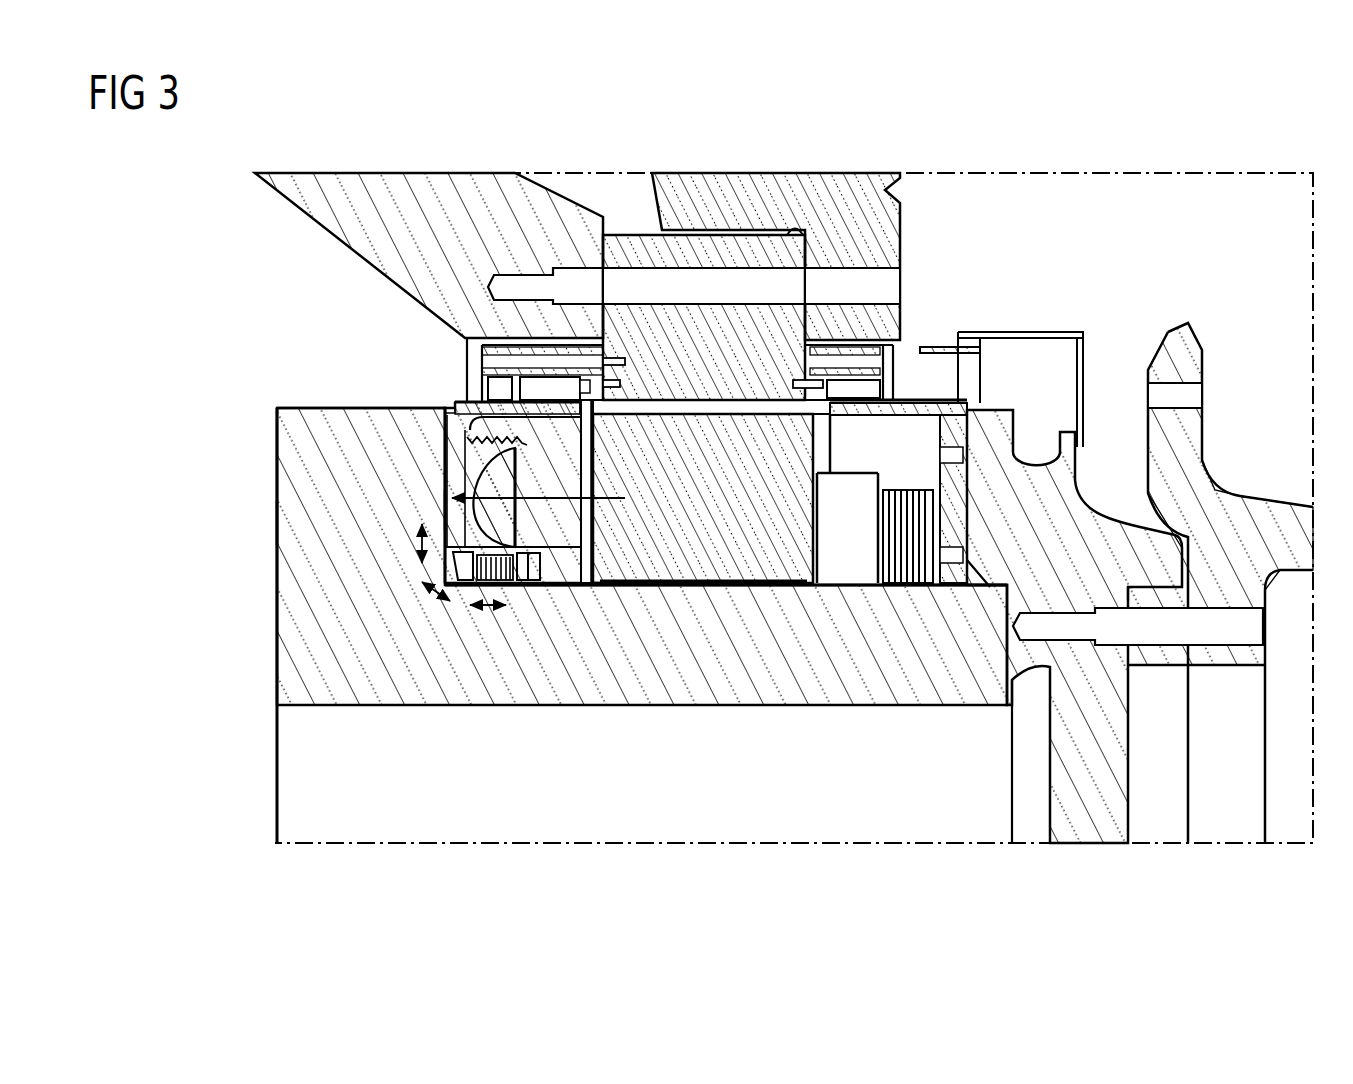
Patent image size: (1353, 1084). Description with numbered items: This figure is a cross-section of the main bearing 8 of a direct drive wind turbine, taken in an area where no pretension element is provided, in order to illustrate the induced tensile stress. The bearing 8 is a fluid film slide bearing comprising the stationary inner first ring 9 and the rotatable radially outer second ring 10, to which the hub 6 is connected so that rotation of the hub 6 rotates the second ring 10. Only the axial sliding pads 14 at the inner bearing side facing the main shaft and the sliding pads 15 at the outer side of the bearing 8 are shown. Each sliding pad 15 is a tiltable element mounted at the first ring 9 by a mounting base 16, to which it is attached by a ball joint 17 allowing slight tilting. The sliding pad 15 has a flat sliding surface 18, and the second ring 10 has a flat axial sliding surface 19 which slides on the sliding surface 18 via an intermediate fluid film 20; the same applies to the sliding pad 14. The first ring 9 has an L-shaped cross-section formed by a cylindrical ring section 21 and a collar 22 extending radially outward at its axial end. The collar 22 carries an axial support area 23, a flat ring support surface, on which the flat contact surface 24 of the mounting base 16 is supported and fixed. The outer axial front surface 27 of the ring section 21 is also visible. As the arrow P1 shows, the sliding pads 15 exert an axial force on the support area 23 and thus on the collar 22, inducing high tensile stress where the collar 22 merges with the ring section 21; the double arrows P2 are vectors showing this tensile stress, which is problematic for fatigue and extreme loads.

The hub 6 is at (382, 243).
The main bearing 8 is at (246, 730).
The first ring 9 is at (246, 654).
The second ring 10 is at (724, 213).
The axial sliding pads 14 is at (852, 557).
The sliding pads 15 is at (547, 545).
The mounting base 16 is at (468, 470).
The ball joint 17 is at (476, 458).
The sliding surface 18 is at (478, 440).
The axial sliding surface 19 is at (600, 487).
The fluid film 20 is at (600, 513).
The cylindrical ring section 21 is at (763, 665).
The collar 22 is at (292, 522).
The axial support area 23 is at (443, 510).
The flat contact surface 24 is at (512, 550).
The outer axial front surface 27 is at (277, 672).
The arrow P1 is at (568, 500).
The double arrows P2 is at (418, 620).